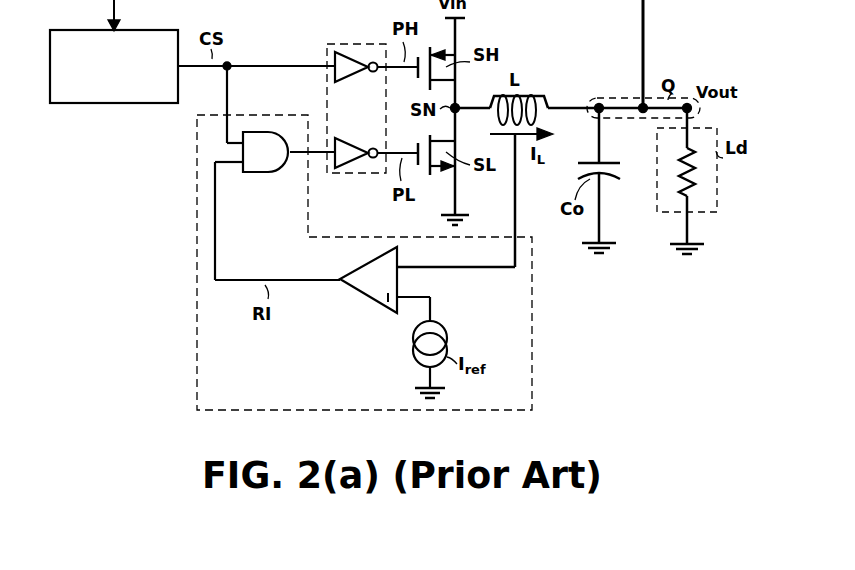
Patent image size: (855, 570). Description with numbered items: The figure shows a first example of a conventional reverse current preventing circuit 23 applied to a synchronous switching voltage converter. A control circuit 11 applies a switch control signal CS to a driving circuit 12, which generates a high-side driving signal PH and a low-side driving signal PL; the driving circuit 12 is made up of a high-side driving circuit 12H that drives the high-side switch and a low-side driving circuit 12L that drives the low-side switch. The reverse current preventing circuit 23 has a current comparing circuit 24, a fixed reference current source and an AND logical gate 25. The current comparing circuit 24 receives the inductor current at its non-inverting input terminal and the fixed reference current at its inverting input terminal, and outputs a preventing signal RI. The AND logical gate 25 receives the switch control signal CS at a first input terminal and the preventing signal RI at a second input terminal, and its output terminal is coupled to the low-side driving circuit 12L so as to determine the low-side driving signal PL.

The control circuit 11 is at (92, 105).
The driving circuit 12 is at (350, 44).
The high-side driving circuit 12H is at (356, 77).
The low-side driving circuit 12L is at (356, 142).
The reverse current preventing circuit 23 is at (197, 308).
The current comparing circuit 24 is at (378, 308).
The AND logical gate 25 is at (258, 174).